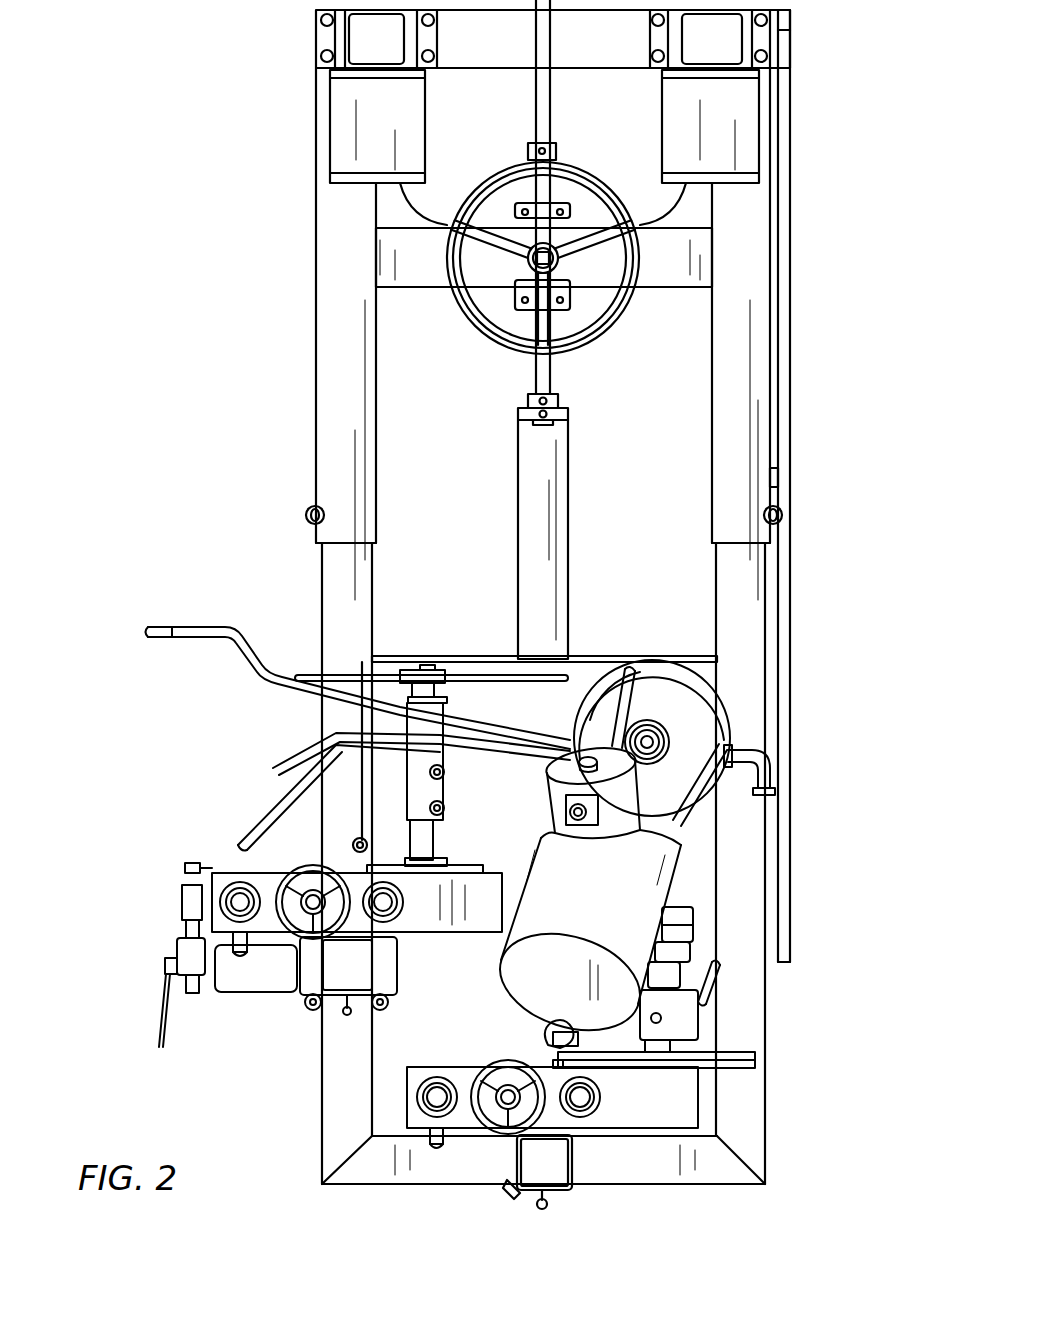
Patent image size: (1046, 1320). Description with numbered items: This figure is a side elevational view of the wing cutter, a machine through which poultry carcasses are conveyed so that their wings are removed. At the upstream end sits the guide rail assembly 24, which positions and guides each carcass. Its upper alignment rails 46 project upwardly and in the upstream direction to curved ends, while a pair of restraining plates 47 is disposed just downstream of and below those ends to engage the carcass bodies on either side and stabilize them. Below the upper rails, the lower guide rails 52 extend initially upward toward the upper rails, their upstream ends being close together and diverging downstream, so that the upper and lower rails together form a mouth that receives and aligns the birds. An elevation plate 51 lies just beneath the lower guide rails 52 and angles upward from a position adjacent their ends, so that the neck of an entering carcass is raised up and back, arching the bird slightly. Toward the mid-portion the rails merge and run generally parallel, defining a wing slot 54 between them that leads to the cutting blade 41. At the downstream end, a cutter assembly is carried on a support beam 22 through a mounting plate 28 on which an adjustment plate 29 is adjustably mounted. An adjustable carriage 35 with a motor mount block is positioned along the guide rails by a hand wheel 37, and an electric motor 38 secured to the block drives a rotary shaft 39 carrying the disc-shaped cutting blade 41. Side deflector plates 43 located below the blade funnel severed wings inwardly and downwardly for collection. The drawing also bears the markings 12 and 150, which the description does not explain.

The dimension gap 12 is at (362, 1033).
The support beam 22 is at (670, 1102).
The guide rail assembly 24 is at (141, 693).
The mounting plate 28 is at (747, 1070).
The adjustment plate 29 is at (740, 1050).
The adjustable carriage 35 is at (655, 977).
The hand wheel 37 is at (553, 1045).
The electric motor 38 is at (594, 889).
The rotary shaft 39 is at (640, 747).
The cutting blade 41 is at (653, 700).
The side deflector plates 43 is at (692, 898).
The upper alignment rails 46 is at (195, 623).
The restraining plates 47 is at (343, 670).
The elevation plate 51 is at (295, 787).
The lower guide rails 52 is at (252, 800).
The wing slot 54 is at (493, 745).
The dimension height 150 is at (372, 1135).